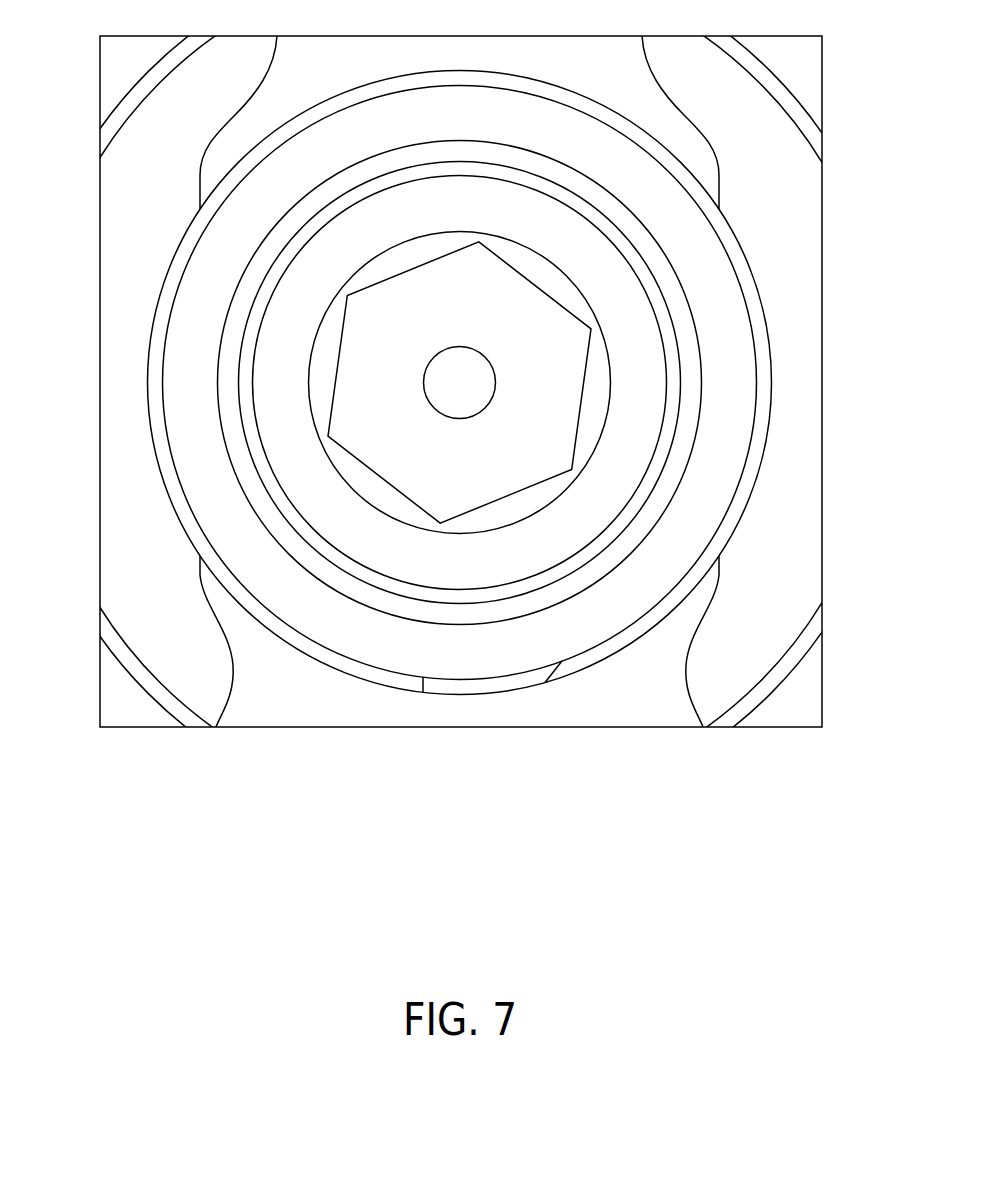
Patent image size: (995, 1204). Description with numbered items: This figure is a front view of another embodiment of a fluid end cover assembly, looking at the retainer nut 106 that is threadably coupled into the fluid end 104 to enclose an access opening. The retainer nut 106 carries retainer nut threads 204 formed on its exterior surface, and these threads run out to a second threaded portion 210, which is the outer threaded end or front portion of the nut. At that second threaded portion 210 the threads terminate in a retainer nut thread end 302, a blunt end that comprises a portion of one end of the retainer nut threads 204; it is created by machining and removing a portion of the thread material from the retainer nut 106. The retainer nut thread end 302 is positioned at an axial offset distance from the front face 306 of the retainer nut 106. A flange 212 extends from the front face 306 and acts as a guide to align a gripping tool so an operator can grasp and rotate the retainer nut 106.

The fluid end 104 is at (775, 557).
The retainer nut 106 is at (157, 307).
The retainer nut threads 204 is at (662, 610).
The second threaded portion 210 is at (441, 710).
The flange 212 is at (638, 342).
The retainer nut thread end 302 is at (487, 685).
The front face 306 is at (213, 485).